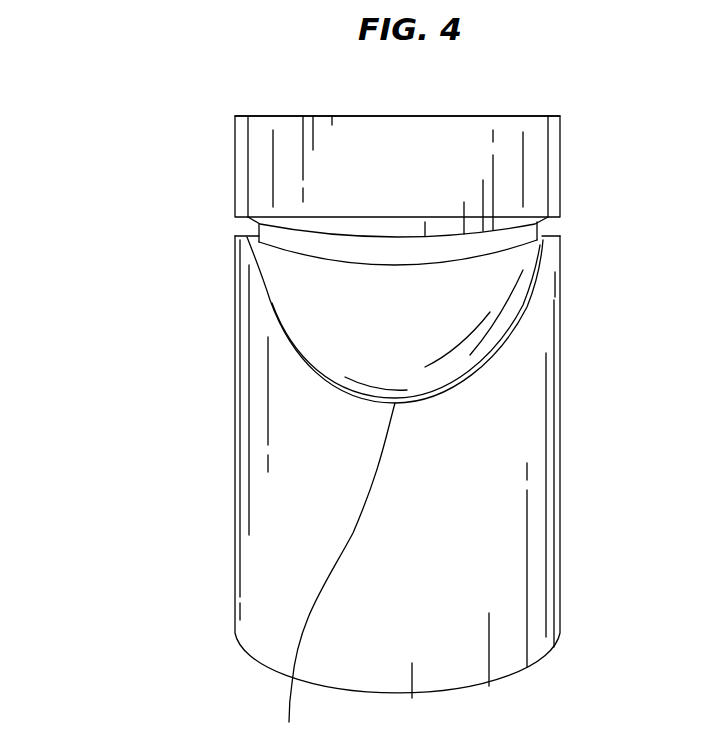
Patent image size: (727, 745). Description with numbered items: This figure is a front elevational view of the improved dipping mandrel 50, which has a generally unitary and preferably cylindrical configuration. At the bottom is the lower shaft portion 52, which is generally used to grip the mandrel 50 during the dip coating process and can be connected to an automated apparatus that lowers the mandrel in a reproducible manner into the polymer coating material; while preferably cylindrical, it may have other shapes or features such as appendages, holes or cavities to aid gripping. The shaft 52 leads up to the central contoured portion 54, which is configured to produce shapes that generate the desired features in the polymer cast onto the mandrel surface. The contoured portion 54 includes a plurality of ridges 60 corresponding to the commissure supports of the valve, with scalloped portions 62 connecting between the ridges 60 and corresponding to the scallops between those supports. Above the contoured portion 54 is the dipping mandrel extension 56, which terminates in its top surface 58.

The mandrel 50 is at (128, 400).
The lower shaft portion 52 is at (285, 503).
The contoured portion 54 is at (270, 315).
The dipping mandrel extension 56 is at (258, 175).
The top surface 58 is at (477, 115).
The ridges 60 is at (245, 233).
The scalloped portions 62 is at (338, 574).